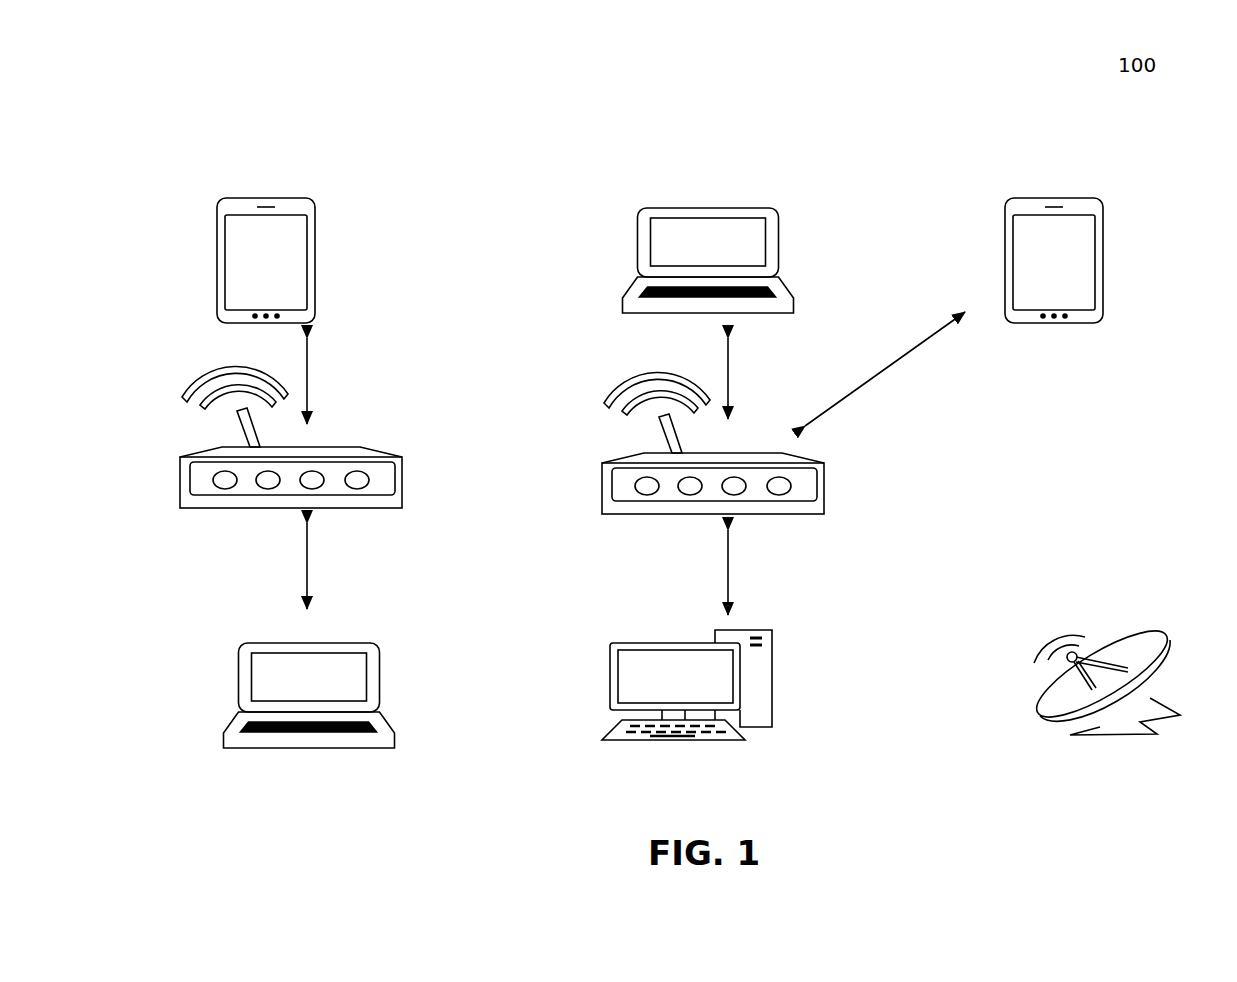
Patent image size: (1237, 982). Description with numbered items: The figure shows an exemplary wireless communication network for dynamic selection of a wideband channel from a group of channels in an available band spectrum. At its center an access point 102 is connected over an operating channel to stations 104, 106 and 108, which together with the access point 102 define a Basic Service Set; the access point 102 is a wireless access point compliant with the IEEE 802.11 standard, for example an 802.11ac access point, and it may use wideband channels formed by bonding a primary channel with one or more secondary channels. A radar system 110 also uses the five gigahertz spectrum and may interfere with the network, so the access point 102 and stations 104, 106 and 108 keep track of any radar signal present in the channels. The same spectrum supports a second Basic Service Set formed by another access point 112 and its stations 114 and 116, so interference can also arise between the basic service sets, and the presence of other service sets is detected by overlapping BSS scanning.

The access point 102 is at (787, 517).
The station 104 is at (727, 207).
The station 106 is at (1052, 197).
The station 108 is at (645, 643).
The radar system 110 is at (1107, 662).
The access point 112 is at (346, 447).
The station 114 is at (267, 197).
The station 116 is at (330, 642).